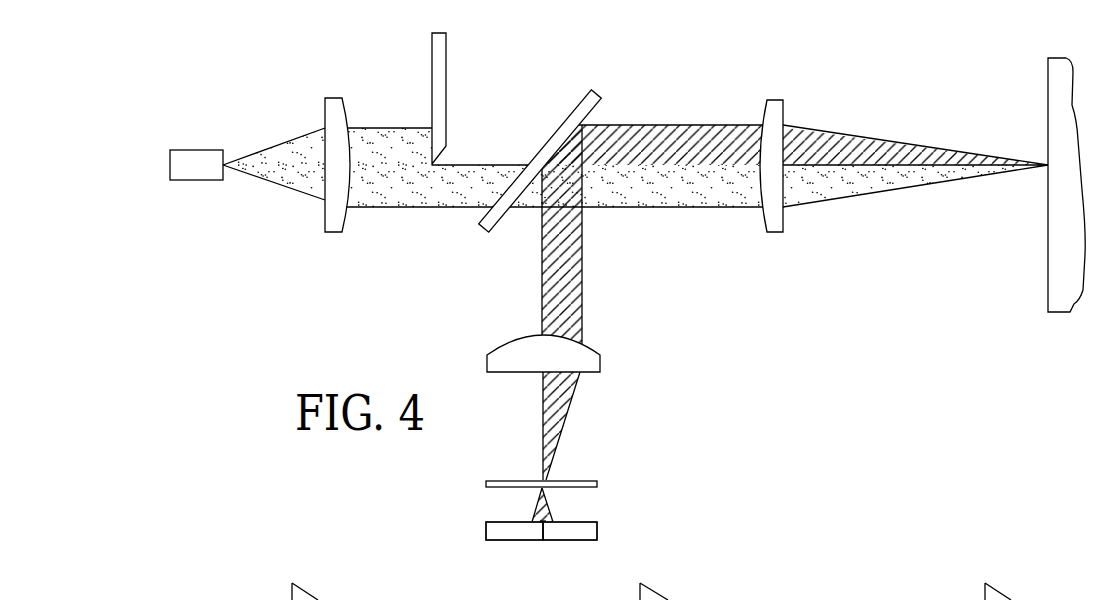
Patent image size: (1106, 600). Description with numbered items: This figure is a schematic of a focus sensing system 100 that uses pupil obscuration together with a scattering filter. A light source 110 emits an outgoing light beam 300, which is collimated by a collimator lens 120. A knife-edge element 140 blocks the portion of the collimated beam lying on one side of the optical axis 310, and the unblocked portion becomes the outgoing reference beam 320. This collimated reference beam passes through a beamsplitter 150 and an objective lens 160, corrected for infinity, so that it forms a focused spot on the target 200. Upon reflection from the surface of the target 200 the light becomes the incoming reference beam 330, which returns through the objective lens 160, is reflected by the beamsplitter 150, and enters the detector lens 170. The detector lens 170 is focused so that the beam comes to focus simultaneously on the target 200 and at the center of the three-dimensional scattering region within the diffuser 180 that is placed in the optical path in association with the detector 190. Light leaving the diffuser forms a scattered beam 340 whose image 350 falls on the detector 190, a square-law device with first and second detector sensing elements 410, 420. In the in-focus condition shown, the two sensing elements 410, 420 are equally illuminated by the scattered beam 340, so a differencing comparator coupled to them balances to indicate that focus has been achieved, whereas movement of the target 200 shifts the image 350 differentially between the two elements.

The optical system 100 is at (951, 64).
The light source 110 is at (190, 181).
The collimator lens 120 is at (332, 100).
The knife-edge element 140 is at (447, 53).
The beamsplitter 150 is at (565, 117).
The objective lens 160 is at (777, 100).
The detector lens 170 is at (600, 365).
The diffuser 180 is at (597, 483).
The detector 190 is at (598, 530).
The target 200 is at (1048, 293).
The outgoing light beam 300 is at (283, 142).
The optical axis 310 is at (490, 163).
The outgoing reference beam 320 is at (678, 207).
The incoming reference beam 330 is at (680, 123).
The scattered beam 340 is at (538, 508).
The image of scattered beam 350 is at (562, 515).
The first detector sensing element 410 is at (517, 533).
The second detector sensing element 420 is at (568, 535).